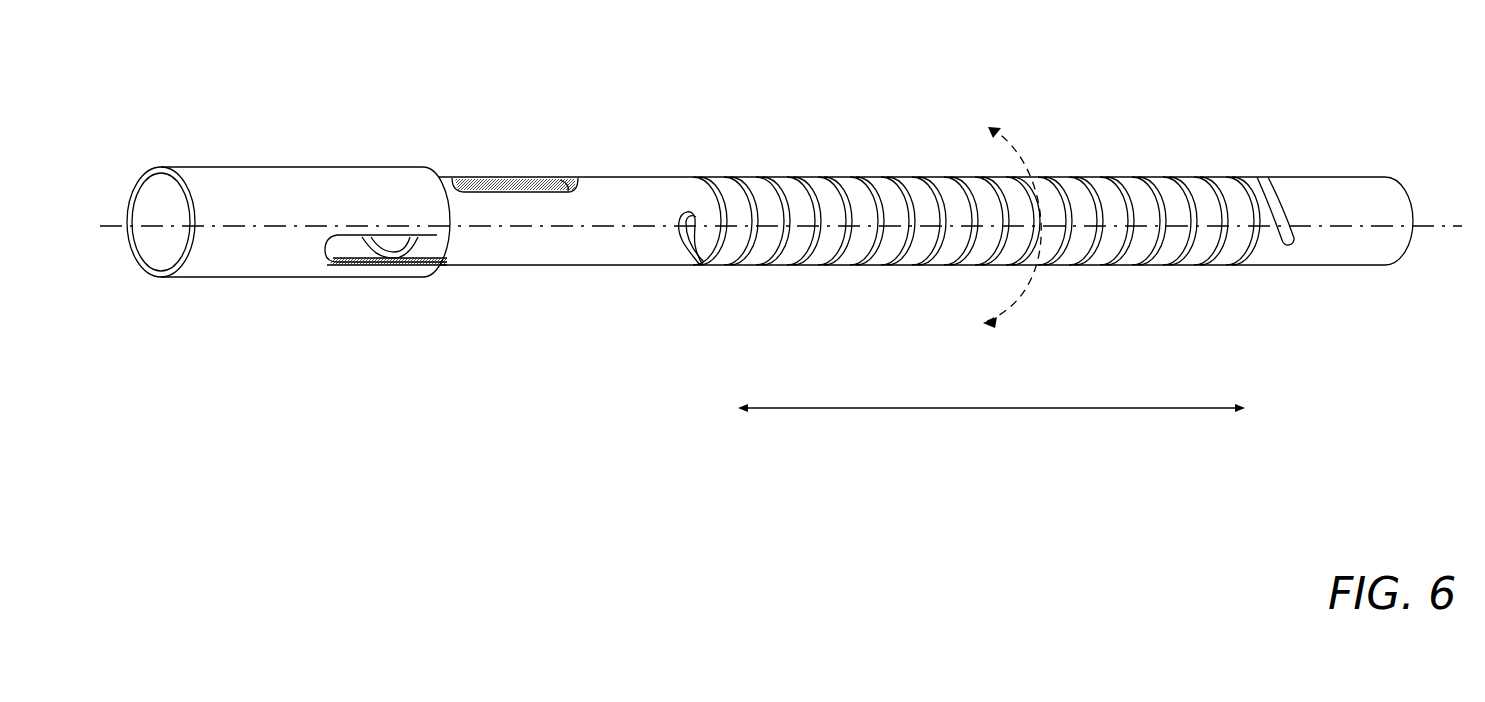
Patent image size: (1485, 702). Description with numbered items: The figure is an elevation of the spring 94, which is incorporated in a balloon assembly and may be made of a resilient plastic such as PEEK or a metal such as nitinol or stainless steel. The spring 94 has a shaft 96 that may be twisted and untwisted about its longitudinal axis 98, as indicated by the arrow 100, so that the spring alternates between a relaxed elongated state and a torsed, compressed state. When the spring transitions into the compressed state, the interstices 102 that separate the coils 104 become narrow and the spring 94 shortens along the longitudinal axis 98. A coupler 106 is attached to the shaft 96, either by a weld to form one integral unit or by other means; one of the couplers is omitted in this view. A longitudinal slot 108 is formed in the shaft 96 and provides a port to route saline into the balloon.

The spring 94 is at (609, 88).
The shaft 96 is at (580, 252).
The longitudinal axis 98 is at (1343, 228).
The arrow 100 is at (1020, 140).
The interstices 102 is at (768, 265).
The coils 104 is at (765, 177).
The coupler 106 is at (291, 277).
The longitudinal slot 108 is at (490, 177).